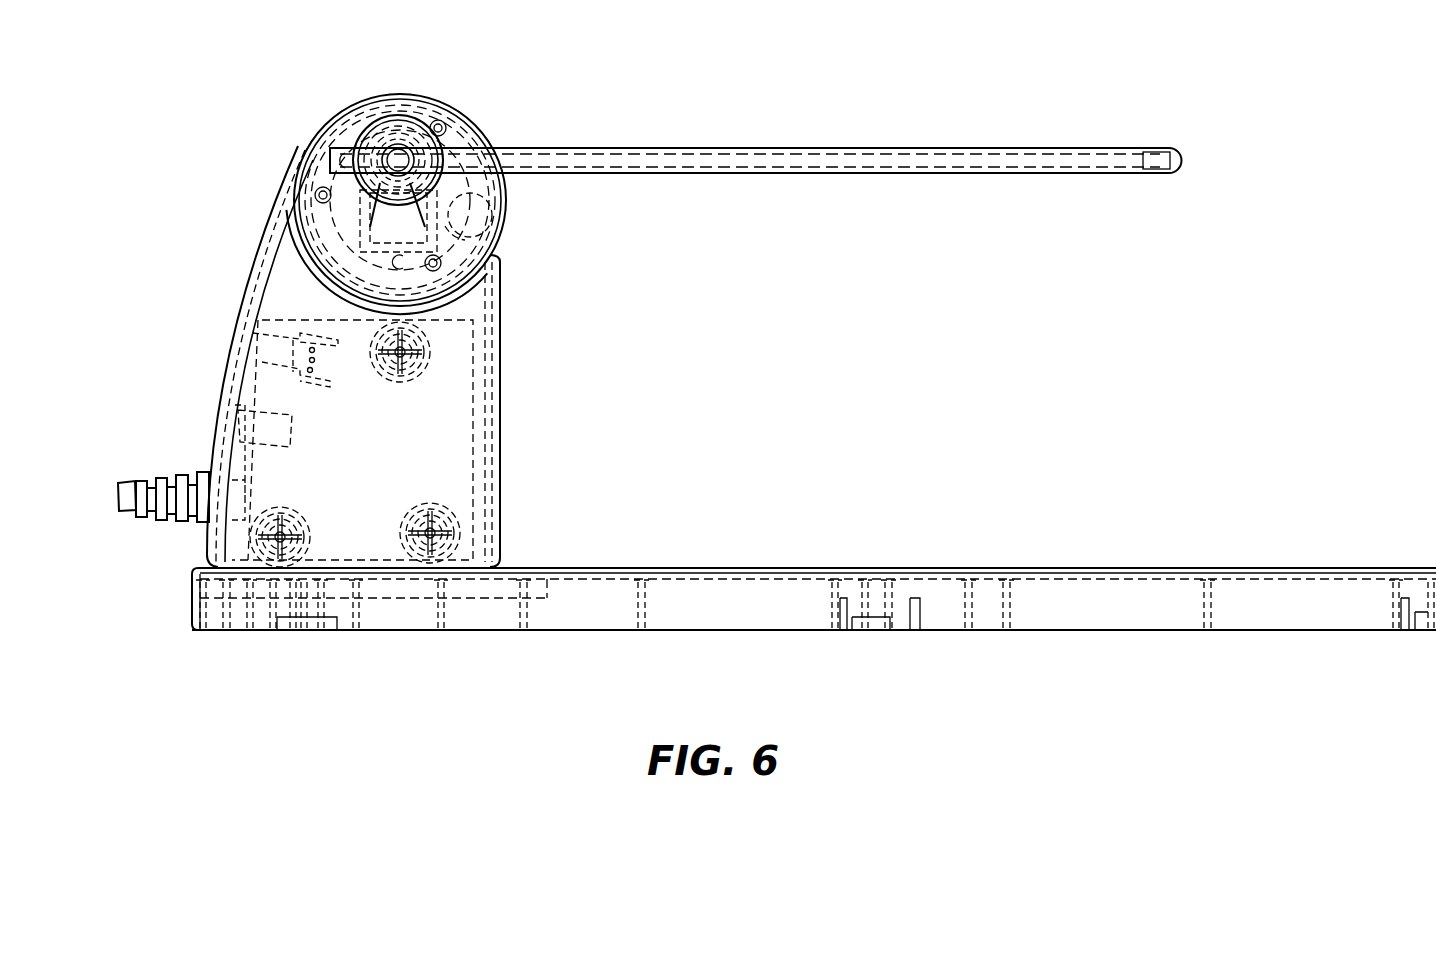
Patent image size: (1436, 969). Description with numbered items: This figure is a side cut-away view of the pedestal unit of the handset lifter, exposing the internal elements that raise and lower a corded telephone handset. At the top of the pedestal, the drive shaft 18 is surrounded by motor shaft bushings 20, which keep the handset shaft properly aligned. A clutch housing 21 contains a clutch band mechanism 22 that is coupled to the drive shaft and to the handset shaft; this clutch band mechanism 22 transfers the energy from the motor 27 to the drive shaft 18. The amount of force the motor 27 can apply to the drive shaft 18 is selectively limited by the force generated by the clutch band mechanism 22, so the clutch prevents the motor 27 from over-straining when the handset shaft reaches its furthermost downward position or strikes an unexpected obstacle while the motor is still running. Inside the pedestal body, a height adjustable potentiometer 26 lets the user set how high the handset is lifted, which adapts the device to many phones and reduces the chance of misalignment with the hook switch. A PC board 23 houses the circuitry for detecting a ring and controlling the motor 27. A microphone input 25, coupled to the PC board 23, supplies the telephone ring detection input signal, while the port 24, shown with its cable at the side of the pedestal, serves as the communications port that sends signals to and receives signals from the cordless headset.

The drive shaft 18 is at (412, 150).
The motor shaft bushings 20 is at (399, 158).
The clutch housing 21 is at (500, 215).
The clutch band mechanism 22 is at (495, 232).
The PC board 23 is at (502, 472).
The port 24 is at (125, 480).
The microphone input 25 is at (217, 414).
The height adjustable potentiometer 26 is at (275, 320).
The motor 27 is at (443, 152).